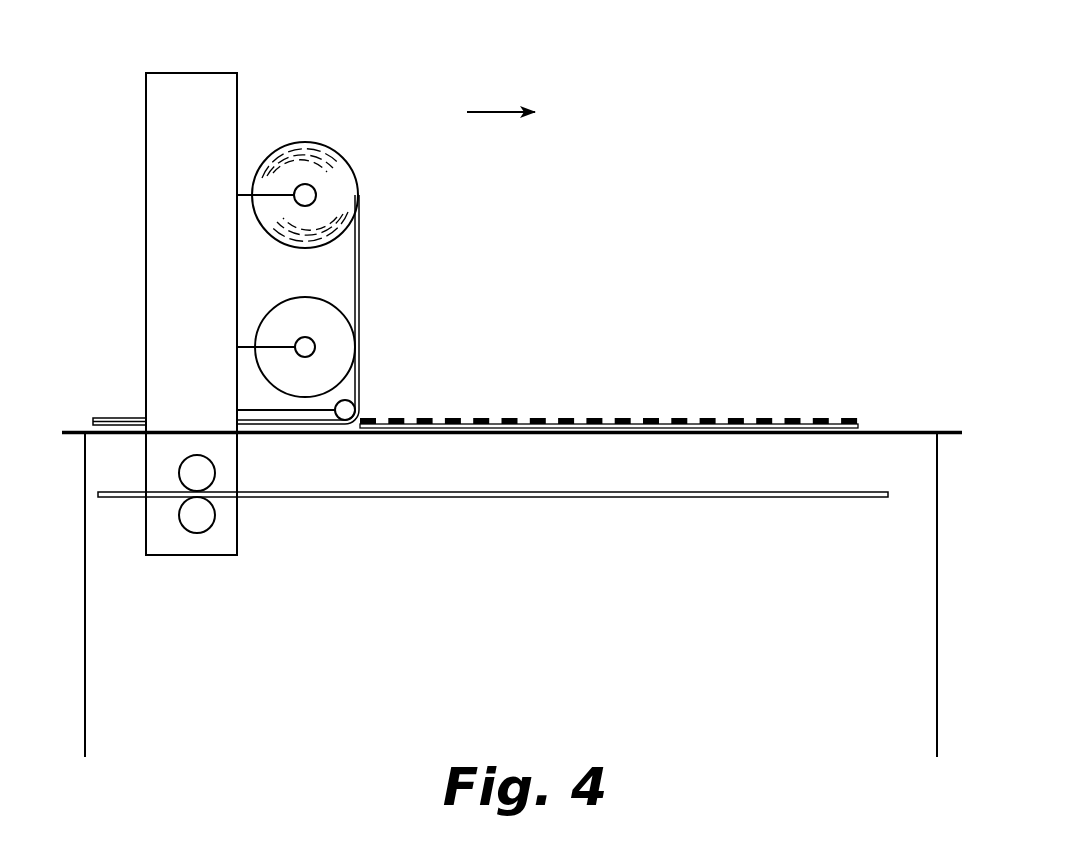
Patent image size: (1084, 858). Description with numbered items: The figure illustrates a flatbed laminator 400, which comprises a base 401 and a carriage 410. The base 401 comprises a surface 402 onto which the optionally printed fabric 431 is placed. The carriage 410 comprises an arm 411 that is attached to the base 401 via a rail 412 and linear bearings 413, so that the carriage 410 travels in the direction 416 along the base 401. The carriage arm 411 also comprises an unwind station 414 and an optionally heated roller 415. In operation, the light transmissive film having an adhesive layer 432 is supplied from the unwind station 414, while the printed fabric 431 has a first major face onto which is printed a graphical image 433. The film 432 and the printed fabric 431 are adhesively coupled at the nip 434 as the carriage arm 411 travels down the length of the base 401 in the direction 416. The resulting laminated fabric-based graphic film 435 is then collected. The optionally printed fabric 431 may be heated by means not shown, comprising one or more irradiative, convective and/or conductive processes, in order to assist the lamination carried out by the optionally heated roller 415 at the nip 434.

The flatbed laminator 400 is at (661, 175).
The base 401 is at (848, 390).
The surface 402 is at (907, 431).
The carriage 410 is at (147, 48).
The arm 411 is at (192, 85).
The rail 412 is at (470, 498).
The linear bearings 413 is at (205, 472).
The unwind station 414 is at (345, 165).
The optionally heated roller 415 is at (338, 330).
The direction 416 is at (490, 111).
The printed fabric 431 is at (779, 417).
The light transmissive film having an adhesive layer 432 is at (362, 265).
The graphical image 433 is at (537, 417).
The nip 434 is at (368, 411).
The laminated fabric-based graphic film 435 is at (112, 418).